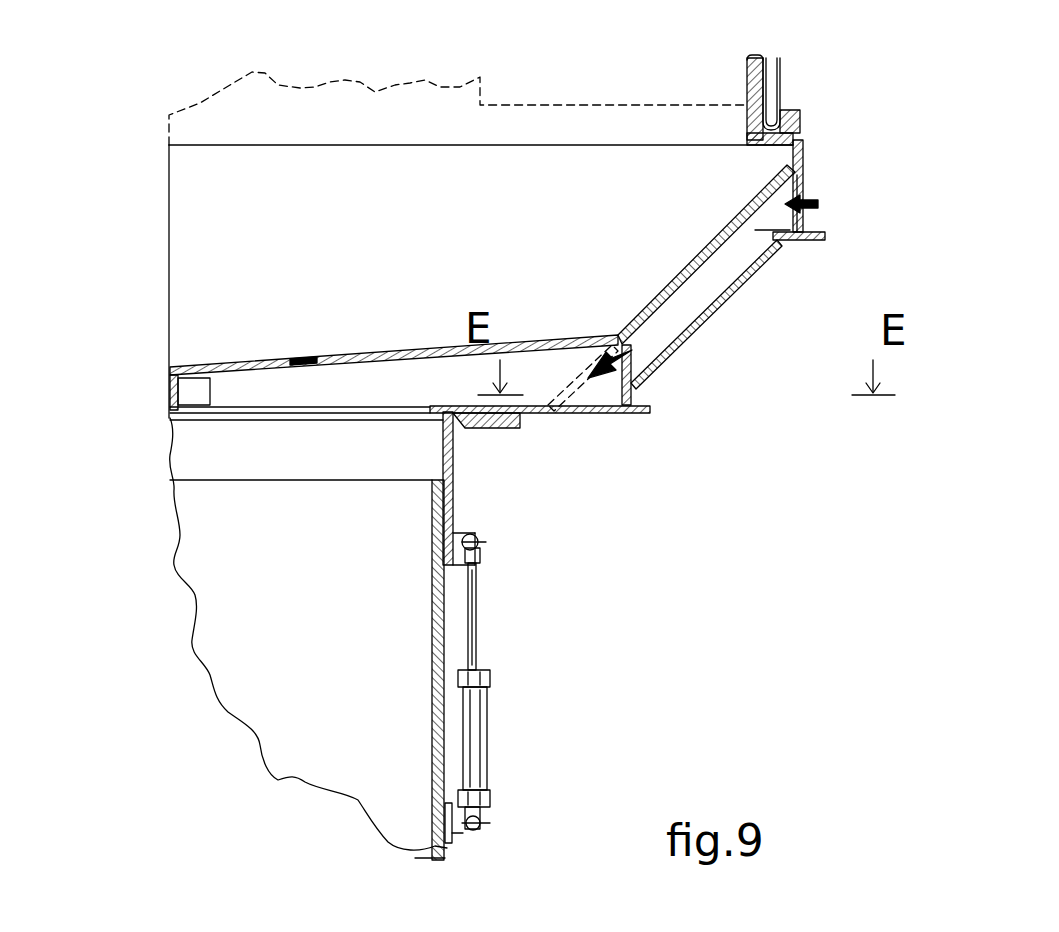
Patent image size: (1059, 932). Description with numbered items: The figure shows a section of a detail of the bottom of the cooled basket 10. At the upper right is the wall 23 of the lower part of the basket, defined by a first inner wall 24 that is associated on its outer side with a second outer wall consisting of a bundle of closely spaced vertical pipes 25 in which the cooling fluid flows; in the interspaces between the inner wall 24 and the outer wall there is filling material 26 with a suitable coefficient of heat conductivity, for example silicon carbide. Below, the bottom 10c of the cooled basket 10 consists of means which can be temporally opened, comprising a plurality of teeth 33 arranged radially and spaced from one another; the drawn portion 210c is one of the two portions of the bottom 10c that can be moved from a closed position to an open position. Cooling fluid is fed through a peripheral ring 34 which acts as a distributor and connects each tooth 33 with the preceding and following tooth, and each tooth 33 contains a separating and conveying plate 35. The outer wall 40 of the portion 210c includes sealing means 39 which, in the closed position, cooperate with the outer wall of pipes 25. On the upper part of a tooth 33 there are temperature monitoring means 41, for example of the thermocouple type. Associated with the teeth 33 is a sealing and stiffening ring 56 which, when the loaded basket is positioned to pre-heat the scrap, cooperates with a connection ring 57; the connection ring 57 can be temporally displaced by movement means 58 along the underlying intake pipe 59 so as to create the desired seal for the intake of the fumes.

The cooled basket 10 is at (156, 158).
The bottom 10c is at (594, 479).
The wall 23 is at (795, 86).
The first inner wall 24 is at (748, 68).
The vertical pipes 25 is at (778, 75).
The filling material 26 is at (762, 58).
The tooth 33 is at (392, 355).
The peripheral ring 34 is at (652, 344).
The separating and conveying plate 35 is at (222, 398).
The sealing means 39 is at (800, 120).
The outer wall 40 is at (802, 135).
The temperature monitoring means 41 is at (300, 362).
The sealing and stiffening ring 56 is at (535, 412).
The connection ring 57 is at (450, 463).
The movement means 58 is at (478, 720).
The intake pipe 59 is at (433, 733).
The portion of the bottom 210c is at (690, 351).